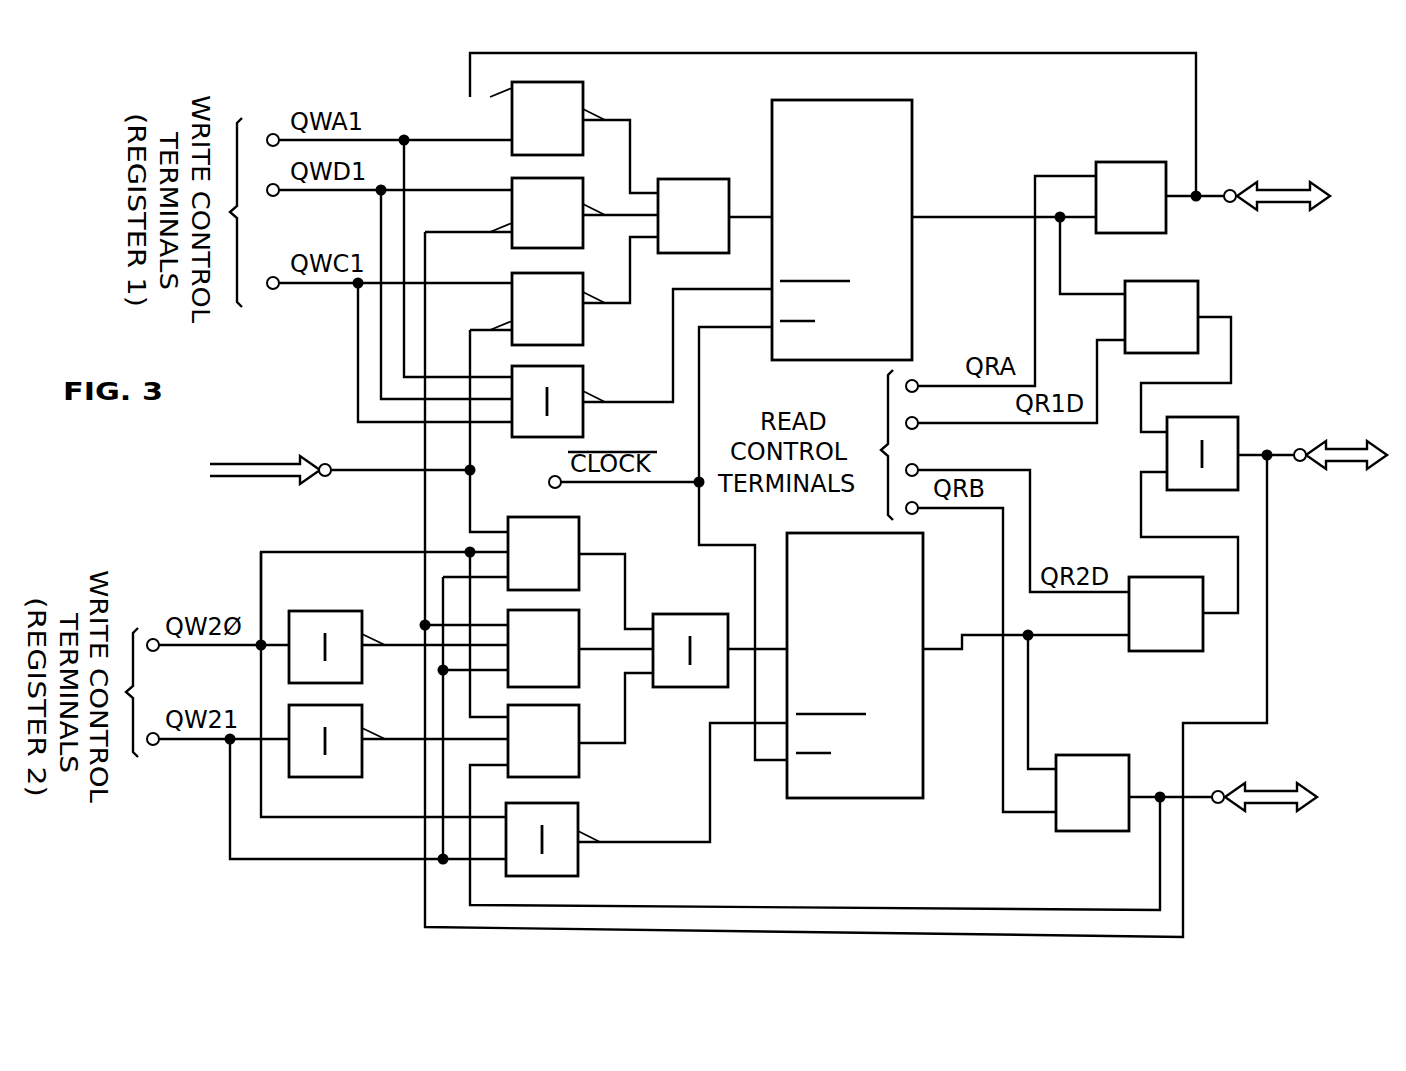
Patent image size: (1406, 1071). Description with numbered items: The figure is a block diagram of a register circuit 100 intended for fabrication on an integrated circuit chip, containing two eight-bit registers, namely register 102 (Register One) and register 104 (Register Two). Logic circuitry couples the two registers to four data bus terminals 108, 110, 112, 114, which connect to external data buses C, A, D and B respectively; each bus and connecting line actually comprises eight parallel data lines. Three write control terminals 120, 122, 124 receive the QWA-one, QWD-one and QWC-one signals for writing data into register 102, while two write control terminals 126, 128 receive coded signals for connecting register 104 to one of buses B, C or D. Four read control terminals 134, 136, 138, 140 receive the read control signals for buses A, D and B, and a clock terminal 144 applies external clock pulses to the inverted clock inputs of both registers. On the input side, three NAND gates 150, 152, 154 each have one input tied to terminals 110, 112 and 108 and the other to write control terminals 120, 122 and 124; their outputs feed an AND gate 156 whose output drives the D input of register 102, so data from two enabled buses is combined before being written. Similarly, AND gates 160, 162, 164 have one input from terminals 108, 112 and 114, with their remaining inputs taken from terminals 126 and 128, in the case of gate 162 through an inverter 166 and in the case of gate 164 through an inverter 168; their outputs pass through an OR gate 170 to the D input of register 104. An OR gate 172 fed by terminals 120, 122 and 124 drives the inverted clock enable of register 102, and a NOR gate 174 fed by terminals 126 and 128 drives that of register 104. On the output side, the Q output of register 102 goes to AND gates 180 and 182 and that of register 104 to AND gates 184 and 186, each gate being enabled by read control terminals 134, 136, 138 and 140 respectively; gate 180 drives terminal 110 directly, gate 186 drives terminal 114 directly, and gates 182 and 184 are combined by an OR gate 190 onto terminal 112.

The register circuit 100 is at (358, 878).
The register 102 is at (912, 128).
The register 104 is at (797, 798).
The data bus terminal 108 is at (327, 476).
The data bus terminal 110 is at (1230, 202).
The data bus terminal 112 is at (1300, 461).
The data bus terminal 114 is at (1218, 803).
The write control terminal 120 is at (271, 134).
The write control terminal 122 is at (273, 196).
The write control terminal 124 is at (273, 289).
The write control terminal 126 is at (153, 639).
The write control terminal 128 is at (153, 745).
The read control terminal 134 is at (915, 380).
The read control terminal 136 is at (915, 418).
The read control terminal 138 is at (915, 465).
The read control terminal 140 is at (915, 513).
The clock terminal 144 is at (549, 482).
The NAND gate 150 is at (583, 95).
The NAND gate 152 is at (512, 186).
The NAND gate 154 is at (583, 333).
The AND gate 156 is at (668, 179).
The AND gate 160 is at (579, 527).
The AND gate 162 is at (579, 620).
The AND gate 164 is at (579, 766).
The inverter 166 is at (308, 611).
The inverter 168 is at (330, 777).
The OR gate 170 is at (705, 687).
The OR gate 172 is at (583, 377).
The NOR gate 174 is at (578, 866).
The AND gate 180 is at (1150, 130).
The AND gate 182 is at (1198, 284).
The AND gate 184 is at (1150, 651).
The AND gate 186 is at (1080, 755).
The OR gate 190 is at (1238, 420).